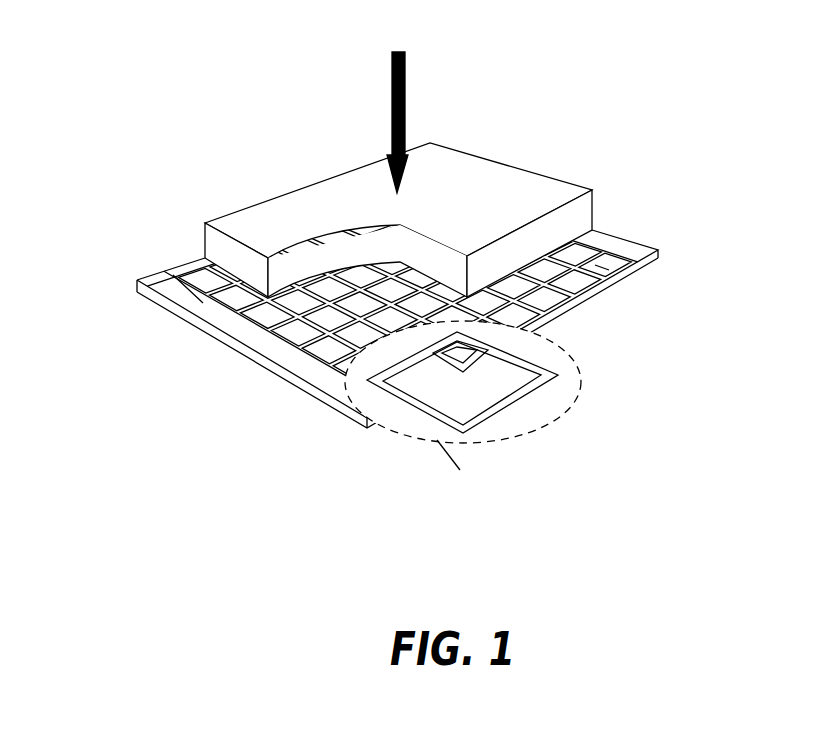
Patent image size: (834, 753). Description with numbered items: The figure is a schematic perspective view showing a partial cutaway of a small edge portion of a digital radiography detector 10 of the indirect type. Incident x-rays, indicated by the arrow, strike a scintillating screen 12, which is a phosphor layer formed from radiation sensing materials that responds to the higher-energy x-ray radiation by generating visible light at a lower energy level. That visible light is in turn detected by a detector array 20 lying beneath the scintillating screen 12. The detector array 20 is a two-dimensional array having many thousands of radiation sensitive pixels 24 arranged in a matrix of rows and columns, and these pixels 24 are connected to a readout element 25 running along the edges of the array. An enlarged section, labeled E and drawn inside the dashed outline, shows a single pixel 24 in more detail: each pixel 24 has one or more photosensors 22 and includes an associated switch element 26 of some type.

The digital radiography detector 10 is at (637, 51).
The scintillating screen 12 is at (252, 210).
The detector array 20 is at (220, 345).
The photosensor 22 is at (460, 390).
The radiation sensitive pixel 24 is at (365, 332).
The readout element 25 is at (173, 277).
The switch element 26 is at (457, 351).